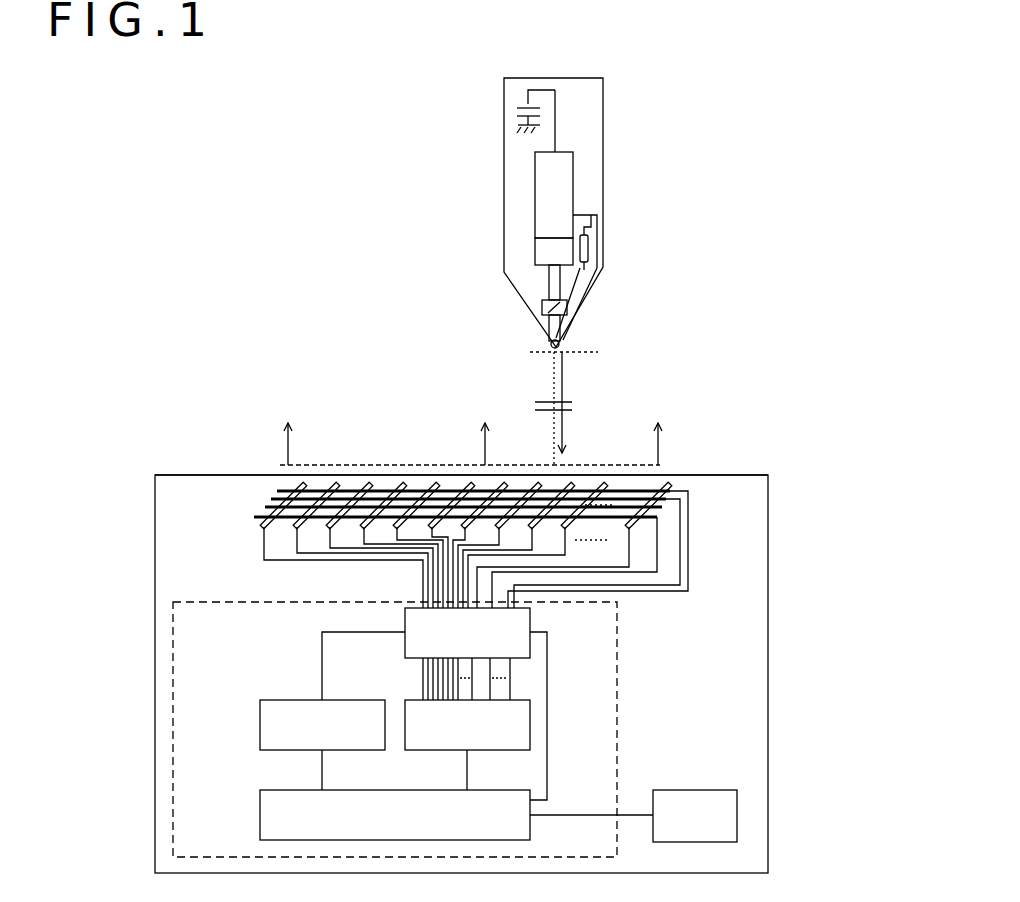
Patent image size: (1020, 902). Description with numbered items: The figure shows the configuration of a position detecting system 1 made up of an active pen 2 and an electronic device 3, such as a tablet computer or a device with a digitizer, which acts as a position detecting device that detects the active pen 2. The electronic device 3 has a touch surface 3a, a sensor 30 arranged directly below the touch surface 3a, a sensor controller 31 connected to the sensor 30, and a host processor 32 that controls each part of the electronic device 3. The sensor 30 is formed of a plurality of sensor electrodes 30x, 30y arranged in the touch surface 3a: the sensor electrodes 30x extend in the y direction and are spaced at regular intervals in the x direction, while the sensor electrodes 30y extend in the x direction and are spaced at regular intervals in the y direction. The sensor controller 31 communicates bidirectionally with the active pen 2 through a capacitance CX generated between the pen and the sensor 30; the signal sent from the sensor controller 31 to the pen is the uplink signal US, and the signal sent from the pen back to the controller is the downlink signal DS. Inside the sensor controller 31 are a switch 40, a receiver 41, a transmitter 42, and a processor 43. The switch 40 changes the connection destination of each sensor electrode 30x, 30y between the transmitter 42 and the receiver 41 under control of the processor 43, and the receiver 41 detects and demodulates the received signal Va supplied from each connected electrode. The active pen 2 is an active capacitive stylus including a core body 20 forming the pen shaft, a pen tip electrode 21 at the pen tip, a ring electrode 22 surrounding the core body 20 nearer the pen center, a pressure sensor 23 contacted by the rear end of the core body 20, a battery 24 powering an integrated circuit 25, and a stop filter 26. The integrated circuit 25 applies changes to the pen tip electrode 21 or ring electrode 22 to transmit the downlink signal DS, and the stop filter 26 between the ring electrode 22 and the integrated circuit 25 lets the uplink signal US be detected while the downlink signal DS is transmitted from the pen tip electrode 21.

The position detecting system 1 is at (290, 241).
The active pen 2 is at (590, 86).
The electronic device 3 is at (768, 678).
The touch surface 3a is at (213, 474).
The core body 20 is at (553, 283).
The pen tip electrode 21 is at (562, 345).
The ring electrode 22 is at (545, 308).
The pressure sensor 23 is at (543, 252).
The battery 24 is at (529, 104).
The integrated circuit 25 is at (540, 185).
The stop filter 26 is at (598, 246).
The sensor 30 is at (471, 493).
The sensor electrodes 30x is at (400, 487).
The sensor electrodes 30y is at (352, 487).
The sensor controller 31 is at (618, 691).
The host processor 32 is at (678, 829).
The switch 40 is at (530, 621).
The receiver 41 is at (530, 726).
The transmitter 42 is at (258, 725).
The processor 43 is at (258, 815).
The uplink signal US is at (658, 464).
The downlink signal DS is at (563, 384).
The capacitance CX is at (531, 409).
The received signal Va is at (522, 680).